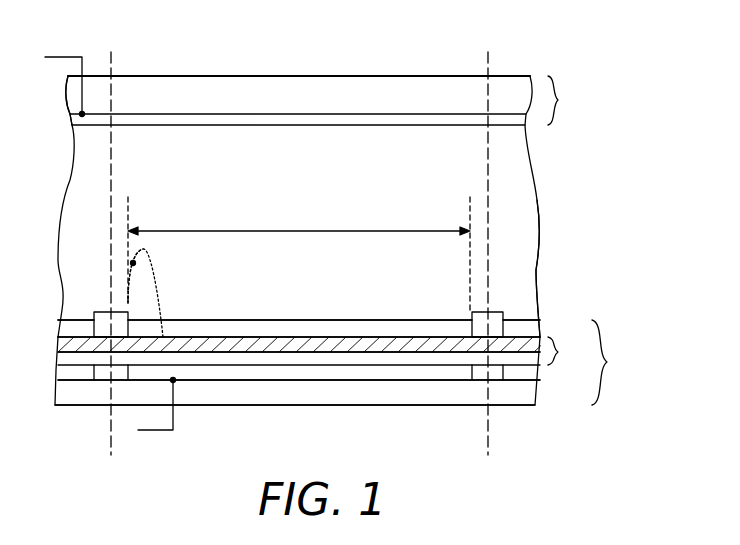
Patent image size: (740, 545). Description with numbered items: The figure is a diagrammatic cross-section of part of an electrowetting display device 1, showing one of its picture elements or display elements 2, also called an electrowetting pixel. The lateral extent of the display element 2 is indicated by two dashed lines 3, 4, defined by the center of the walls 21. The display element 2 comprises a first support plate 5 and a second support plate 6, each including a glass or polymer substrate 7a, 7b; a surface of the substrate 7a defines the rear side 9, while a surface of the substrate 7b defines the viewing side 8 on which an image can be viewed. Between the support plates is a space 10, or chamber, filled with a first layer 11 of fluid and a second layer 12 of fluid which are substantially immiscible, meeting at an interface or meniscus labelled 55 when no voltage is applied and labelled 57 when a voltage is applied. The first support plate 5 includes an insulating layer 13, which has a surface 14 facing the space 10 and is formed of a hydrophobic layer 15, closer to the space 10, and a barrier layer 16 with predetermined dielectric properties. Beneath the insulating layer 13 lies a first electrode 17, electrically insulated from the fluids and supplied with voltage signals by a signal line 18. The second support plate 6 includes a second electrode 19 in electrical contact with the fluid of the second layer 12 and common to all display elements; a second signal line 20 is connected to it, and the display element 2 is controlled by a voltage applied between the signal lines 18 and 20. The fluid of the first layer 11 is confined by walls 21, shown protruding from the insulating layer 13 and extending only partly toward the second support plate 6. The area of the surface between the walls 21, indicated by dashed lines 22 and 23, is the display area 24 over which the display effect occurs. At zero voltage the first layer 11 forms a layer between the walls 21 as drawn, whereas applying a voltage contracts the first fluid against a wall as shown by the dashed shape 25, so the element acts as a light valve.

The electrowetting display device 1 is at (587, 48).
The display element 2 is at (284, 36).
The dashed line 3 is at (111, 58).
The dashed line 4 is at (489, 60).
The first support plate 5 is at (339, 362).
The second support plate 6 is at (563, 100).
The substrate 7a is at (515, 398).
The substrate 7b is at (433, 92).
The viewing side 8 is at (200, 75).
The rear side 9 is at (260, 407).
The space 10 is at (363, 140).
The first layer 11 is at (438, 326).
The second layer 12 is at (535, 203).
The insulating layer 13 is at (321, 351).
The surface 14 is at (343, 338).
The layer 15 is at (298, 348).
The barrier layer 16 is at (248, 356).
The first electrode 17 is at (366, 372).
The signal line 18 is at (157, 434).
The second electrode 19 is at (98, 120).
The second signal line 20 is at (60, 57).
The walls 21 is at (100, 324).
The dashed line 22 is at (469, 200).
The dashed line 23 is at (130, 200).
The display area 24 is at (299, 221).
The dashed shape 25 is at (135, 263).
The interface 55 is at (392, 319).
The interface 57 is at (162, 286).